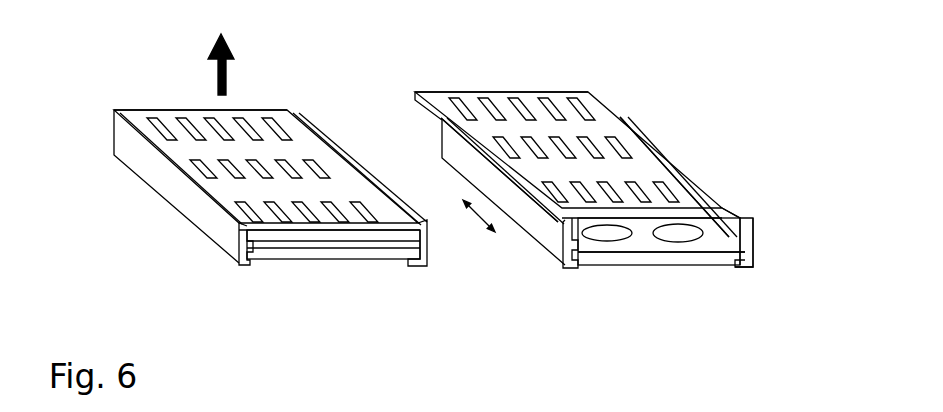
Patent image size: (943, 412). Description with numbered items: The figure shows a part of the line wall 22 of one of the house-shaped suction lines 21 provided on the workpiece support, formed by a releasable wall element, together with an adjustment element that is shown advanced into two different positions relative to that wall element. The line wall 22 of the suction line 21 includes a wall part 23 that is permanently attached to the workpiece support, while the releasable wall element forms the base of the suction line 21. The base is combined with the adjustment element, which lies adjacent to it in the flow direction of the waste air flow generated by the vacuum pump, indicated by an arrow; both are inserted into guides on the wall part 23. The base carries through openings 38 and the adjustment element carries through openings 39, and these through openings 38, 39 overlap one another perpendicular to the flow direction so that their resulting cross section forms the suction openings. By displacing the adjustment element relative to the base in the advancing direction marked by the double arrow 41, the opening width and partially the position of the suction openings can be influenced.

The suction line 21 is at (259, 187).
The line wall 22 is at (268, 280).
The wall part 23 is at (244, 140).
The through openings 38 is at (678, 233).
The through openings 39 is at (470, 128).
The double arrow 41 is at (471, 222).